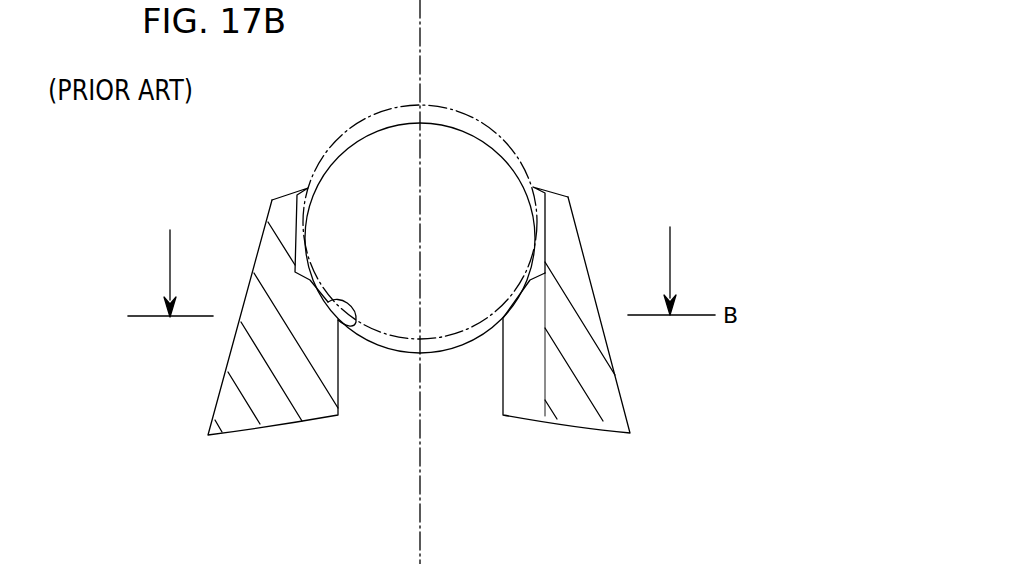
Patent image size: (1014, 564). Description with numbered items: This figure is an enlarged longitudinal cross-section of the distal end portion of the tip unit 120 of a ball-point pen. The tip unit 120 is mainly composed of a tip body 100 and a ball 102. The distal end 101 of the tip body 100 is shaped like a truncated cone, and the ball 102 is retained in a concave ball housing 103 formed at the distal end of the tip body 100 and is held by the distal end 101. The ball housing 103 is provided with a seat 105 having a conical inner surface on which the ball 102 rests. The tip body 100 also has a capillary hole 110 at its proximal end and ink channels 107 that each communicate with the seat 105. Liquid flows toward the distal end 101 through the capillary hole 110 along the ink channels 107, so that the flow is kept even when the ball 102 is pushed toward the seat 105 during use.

The tip body 100 is at (563, 243).
The distal end 101 is at (538, 188).
The ball 102 is at (483, 165).
The ball housing 103 is at (281, 198).
The seat 105 is at (355, 327).
The ink channels 107 is at (523, 410).
The capillary hole 110 is at (458, 398).
The tip unit 120 is at (607, 398).